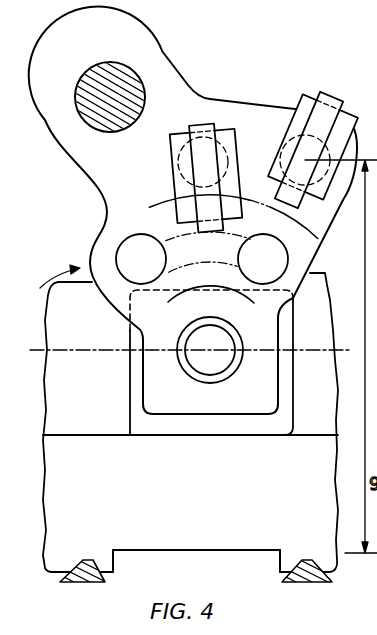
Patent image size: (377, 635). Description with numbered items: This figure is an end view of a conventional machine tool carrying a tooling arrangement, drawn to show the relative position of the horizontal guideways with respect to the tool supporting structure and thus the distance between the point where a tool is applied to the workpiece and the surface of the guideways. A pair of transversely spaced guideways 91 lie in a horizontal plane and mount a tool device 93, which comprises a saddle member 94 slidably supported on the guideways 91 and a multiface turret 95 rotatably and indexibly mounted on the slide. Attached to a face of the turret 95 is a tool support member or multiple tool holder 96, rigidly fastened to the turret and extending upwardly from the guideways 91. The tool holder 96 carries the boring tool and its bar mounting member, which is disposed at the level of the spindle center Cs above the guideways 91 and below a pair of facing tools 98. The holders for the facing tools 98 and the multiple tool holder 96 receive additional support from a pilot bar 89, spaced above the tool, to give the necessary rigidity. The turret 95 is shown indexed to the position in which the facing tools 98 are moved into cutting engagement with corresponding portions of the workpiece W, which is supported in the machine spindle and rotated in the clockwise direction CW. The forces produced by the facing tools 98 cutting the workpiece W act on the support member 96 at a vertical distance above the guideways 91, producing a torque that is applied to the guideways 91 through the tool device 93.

The pilot bar 89 is at (124, 67).
The guideways 91 is at (109, 574).
The tool device 93 is at (43, 524).
The saddle member 94 is at (207, 548).
The multiface turret 95 is at (62, 335).
The multiple tool holder 96 is at (197, 100).
The facing tools 98 is at (207, 212).
The workpiece W is at (158, 204).
The spindle center Cs is at (213, 352).
The clockwise direction CW is at (58, 270).